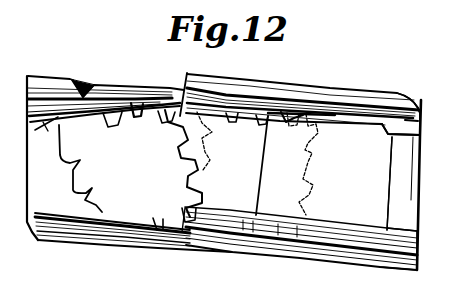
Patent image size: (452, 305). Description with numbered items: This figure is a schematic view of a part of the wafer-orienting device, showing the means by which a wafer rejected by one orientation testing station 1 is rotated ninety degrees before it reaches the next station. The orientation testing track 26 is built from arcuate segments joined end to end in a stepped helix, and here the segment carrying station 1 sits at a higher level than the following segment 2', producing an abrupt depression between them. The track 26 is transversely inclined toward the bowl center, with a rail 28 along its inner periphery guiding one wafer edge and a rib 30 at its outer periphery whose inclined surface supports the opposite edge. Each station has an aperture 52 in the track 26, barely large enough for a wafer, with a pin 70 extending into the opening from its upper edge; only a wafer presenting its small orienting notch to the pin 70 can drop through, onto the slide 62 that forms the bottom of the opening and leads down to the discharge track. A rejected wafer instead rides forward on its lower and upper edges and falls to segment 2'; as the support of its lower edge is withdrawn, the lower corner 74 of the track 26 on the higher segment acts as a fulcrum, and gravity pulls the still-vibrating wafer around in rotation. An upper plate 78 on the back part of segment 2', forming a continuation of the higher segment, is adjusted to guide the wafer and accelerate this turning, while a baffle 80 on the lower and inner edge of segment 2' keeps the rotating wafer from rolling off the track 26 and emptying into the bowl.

The orientation testing station 1 is at (361, 123).
The arcuate segment 2' is at (105, 173).
The track 26 is at (407, 193).
The rail 28 is at (391, 239).
The rib 30 is at (415, 127).
The aperture 52 is at (388, 196).
The slide 62 is at (326, 224).
The pin 70 is at (315, 117).
The lower corner 74 is at (158, 222).
The upper plate 78 is at (112, 91).
The baffle 80 is at (82, 237).